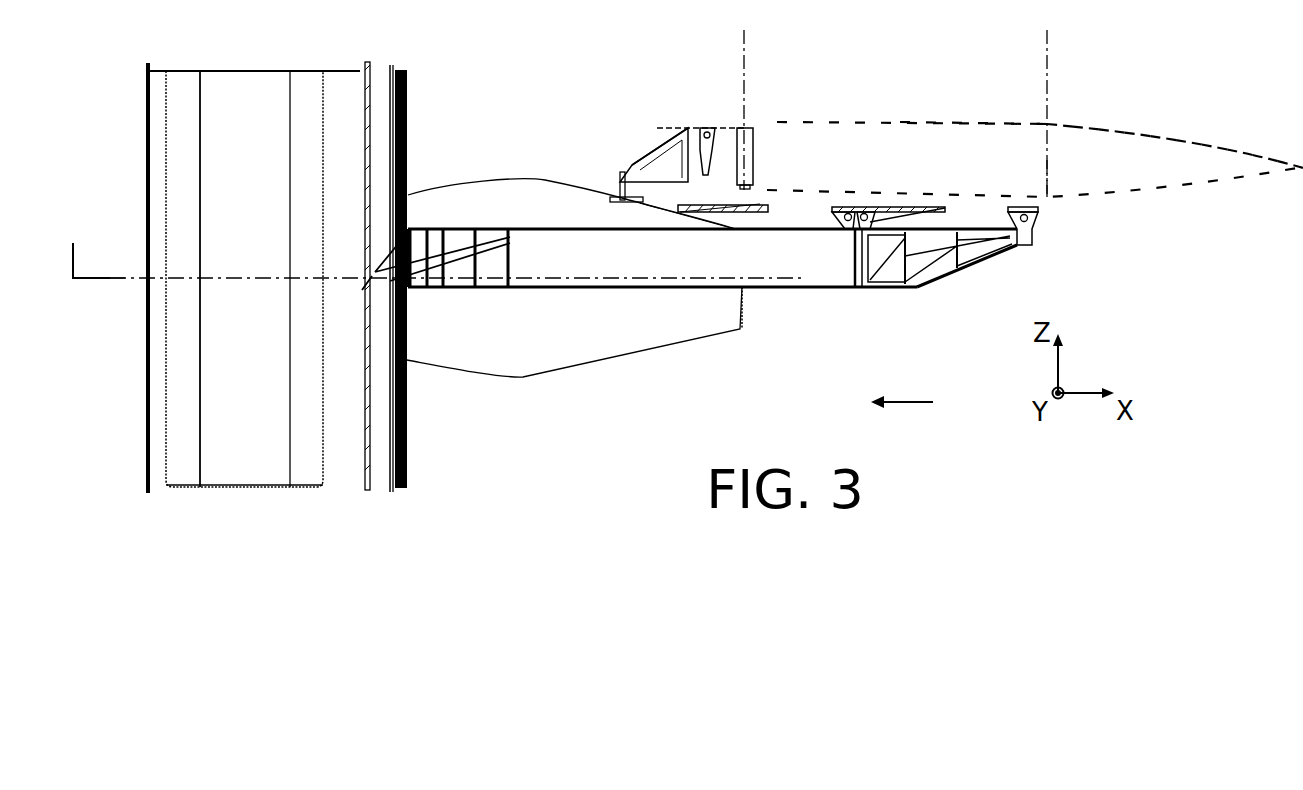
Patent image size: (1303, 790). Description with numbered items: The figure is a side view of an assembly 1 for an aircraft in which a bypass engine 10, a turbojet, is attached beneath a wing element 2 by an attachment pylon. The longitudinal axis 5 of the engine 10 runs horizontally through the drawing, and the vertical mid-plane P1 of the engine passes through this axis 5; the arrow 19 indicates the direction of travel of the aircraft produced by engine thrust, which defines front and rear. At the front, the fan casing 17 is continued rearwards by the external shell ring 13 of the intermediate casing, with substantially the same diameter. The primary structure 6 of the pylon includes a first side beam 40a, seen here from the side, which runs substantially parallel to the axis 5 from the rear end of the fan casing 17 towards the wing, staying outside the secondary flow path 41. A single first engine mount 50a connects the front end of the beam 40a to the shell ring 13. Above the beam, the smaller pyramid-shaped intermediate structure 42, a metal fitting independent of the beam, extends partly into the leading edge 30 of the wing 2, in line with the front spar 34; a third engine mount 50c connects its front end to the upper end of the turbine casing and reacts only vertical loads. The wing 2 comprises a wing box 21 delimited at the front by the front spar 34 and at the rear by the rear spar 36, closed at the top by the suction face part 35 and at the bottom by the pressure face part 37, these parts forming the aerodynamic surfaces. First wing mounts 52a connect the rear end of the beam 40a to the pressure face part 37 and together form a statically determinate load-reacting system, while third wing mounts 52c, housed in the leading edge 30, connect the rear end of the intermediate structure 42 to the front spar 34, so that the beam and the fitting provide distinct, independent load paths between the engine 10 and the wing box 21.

The assembly 1 is at (313, 48).
The wing element 2 is at (995, 116).
The longitudinal axis 5 is at (120, 279).
The primary structure 6 is at (755, 300).
The bypass engine 10 is at (243, 494).
The external shell ring 13 is at (381, 74).
The fan casing 17 is at (215, 480).
The arrow 19 is at (906, 403).
The wing box 21 is at (972, 177).
The leading edge 30 is at (663, 127).
The front spar 34 is at (753, 148).
The suction face part 35 is at (954, 121).
The rear spar 36 is at (1046, 158).
The pressure face part 37 is at (800, 188).
The first side beam 40a is at (570, 275).
The secondary flow path 41 is at (452, 164).
The intermediate structure 42 is at (630, 166).
The first engine mount 50a is at (376, 279).
The third engine mount 50c is at (618, 173).
The first wing mount 52a is at (864, 221).
The third wing mount 52c is at (707, 174).
The vertical mid-plane P1 is at (83, 268).